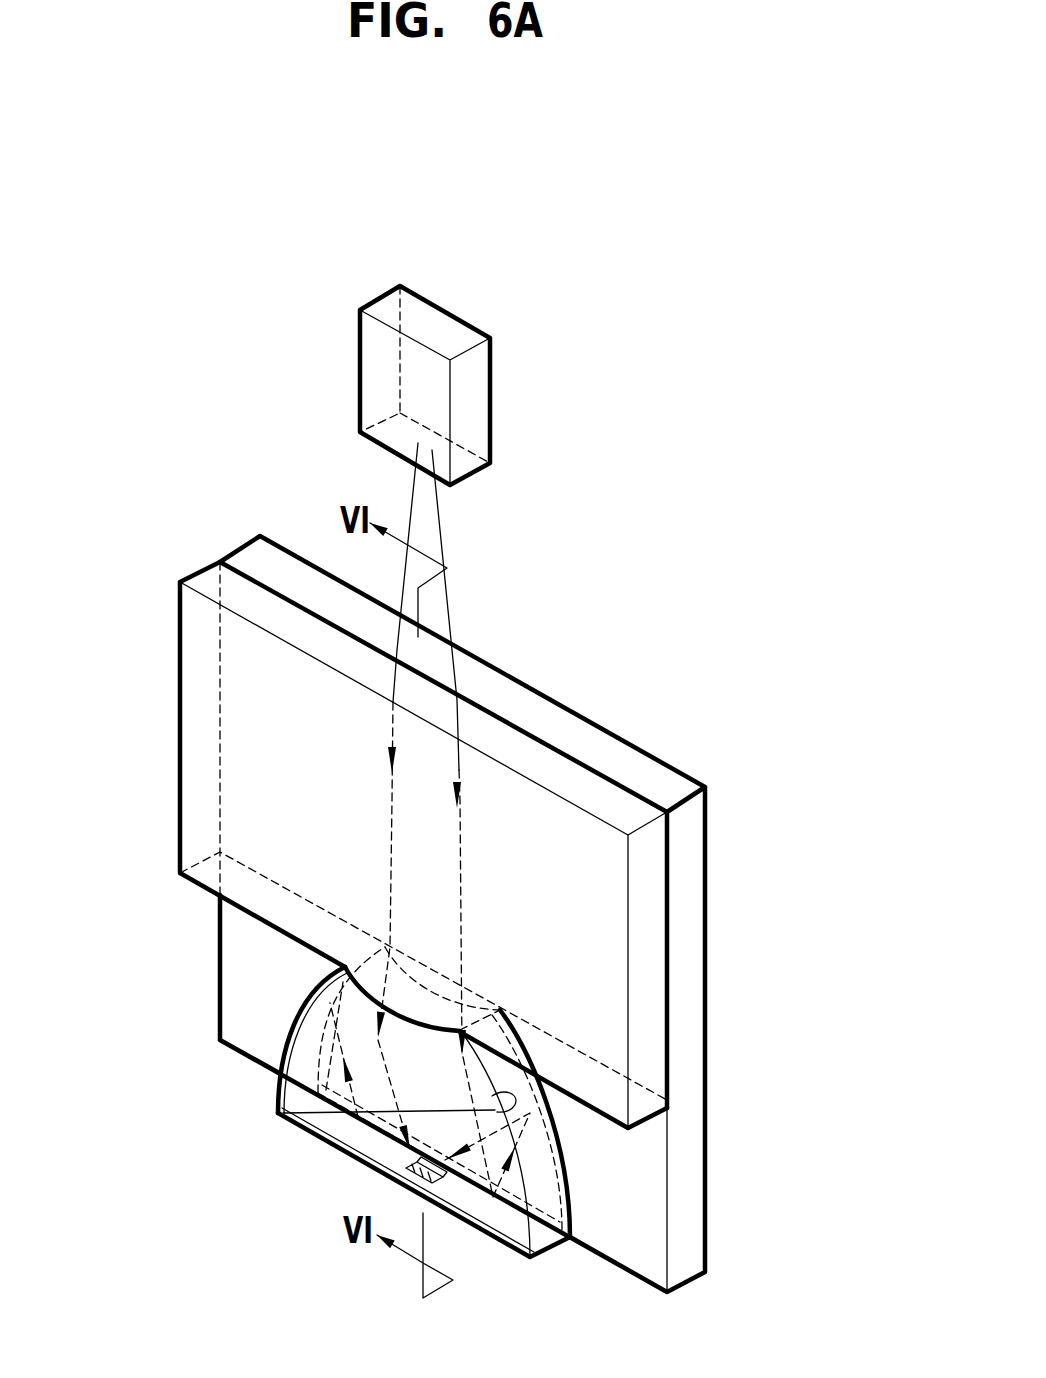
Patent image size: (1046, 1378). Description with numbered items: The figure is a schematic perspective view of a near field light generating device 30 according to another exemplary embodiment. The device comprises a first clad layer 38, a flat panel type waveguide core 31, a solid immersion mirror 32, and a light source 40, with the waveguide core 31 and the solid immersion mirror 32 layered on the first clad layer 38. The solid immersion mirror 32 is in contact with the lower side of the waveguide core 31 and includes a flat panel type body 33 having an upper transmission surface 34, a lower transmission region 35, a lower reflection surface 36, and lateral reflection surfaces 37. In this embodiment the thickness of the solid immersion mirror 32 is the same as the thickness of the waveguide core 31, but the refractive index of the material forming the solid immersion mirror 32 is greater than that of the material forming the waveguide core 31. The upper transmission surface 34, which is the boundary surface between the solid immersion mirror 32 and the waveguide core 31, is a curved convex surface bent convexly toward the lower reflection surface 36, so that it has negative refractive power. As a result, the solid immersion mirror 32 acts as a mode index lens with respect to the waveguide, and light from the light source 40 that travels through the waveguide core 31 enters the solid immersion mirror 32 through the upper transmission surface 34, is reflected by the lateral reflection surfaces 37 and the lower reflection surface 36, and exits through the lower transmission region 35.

The near field light generating device 30 is at (687, 558).
The waveguide core 31 is at (653, 985).
The solid immersion mirror 32 is at (323, 1102).
The flat panel type body 33 is at (300, 1055).
The upper transmission surface 34 is at (410, 1010).
The lower transmission region 35 is at (423, 1160).
The lower reflection surface 36 is at (343, 1137).
The lateral reflection surfaces 37 is at (148, 997).
The first clad layer 38 is at (697, 893).
The light source 40 is at (490, 405).